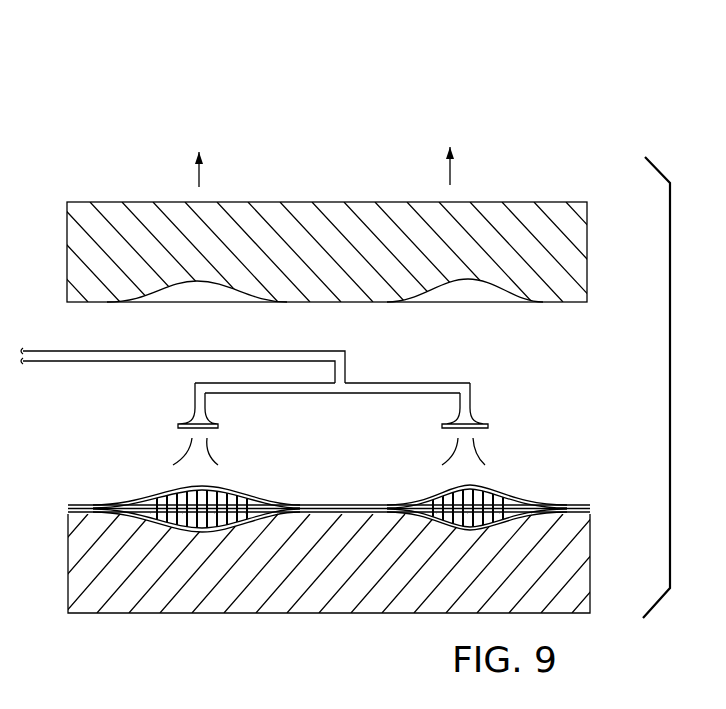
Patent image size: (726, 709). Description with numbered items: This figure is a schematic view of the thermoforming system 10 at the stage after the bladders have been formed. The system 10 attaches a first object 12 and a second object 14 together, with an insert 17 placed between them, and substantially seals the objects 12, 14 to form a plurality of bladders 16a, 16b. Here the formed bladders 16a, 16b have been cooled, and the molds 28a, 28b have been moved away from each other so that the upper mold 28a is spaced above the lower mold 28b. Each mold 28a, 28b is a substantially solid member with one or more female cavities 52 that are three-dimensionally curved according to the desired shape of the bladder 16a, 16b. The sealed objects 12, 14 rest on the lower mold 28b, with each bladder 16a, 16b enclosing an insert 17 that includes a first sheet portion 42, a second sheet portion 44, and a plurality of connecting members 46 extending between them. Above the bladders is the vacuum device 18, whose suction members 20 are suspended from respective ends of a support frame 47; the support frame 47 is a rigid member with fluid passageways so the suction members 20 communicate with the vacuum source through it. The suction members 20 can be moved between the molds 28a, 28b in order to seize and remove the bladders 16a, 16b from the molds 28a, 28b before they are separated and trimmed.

The system 10 is at (88, 175).
The first object 12 is at (572, 505).
The second object 14 is at (572, 513).
The bladder 16a is at (337, 513).
The bladder 16b is at (426, 478).
The insert 17 is at (258, 502).
The vacuum device 18 is at (473, 383).
The suction member 20 is at (474, 420).
The mold 28a is at (287, 213).
The mold 28b is at (293, 613).
The first sheet portion 42 is at (167, 492).
The second sheet portion 44 is at (170, 530).
The connecting member 46 is at (201, 522).
The support frame 47 is at (373, 383).
The female cavity 52 is at (197, 282).